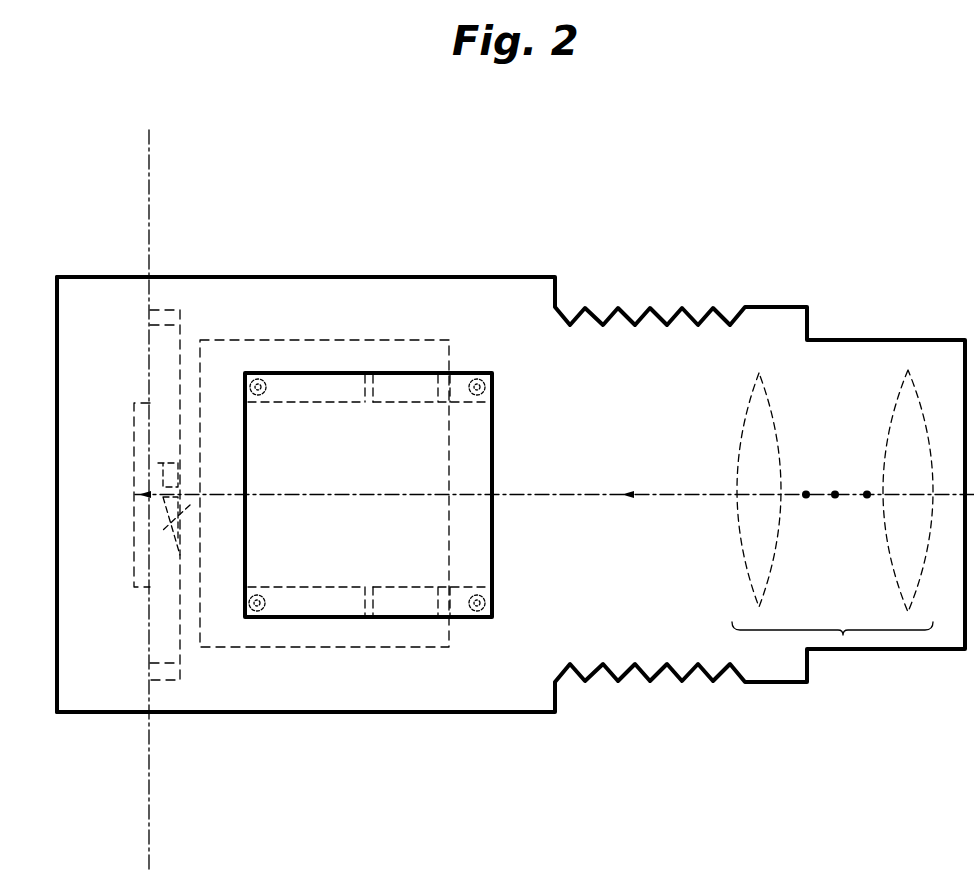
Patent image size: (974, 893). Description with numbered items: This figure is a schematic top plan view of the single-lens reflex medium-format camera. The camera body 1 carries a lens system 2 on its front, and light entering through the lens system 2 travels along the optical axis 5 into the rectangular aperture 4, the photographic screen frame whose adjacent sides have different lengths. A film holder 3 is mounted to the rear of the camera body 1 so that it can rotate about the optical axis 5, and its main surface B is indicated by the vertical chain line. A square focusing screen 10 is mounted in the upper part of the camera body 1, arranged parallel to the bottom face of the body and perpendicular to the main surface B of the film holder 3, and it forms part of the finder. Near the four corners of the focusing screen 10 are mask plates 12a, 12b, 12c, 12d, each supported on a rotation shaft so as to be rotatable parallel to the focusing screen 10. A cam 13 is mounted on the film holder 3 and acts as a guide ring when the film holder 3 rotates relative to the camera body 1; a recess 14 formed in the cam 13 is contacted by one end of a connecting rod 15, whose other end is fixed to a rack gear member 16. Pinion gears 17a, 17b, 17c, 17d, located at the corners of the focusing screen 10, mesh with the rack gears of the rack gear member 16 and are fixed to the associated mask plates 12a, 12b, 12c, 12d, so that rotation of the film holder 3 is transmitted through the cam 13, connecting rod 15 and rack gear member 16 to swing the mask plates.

The camera body 1 is at (508, 713).
The lens system 2 is at (843, 635).
The film holder 3 is at (108, 713).
The rectangular aperture 4 is at (133, 520).
The optical axis 5 is at (607, 497).
The focusing screen 10 is at (493, 452).
The mask plate 12a is at (400, 595).
The mask plate 12b is at (335, 595).
The mask plate 12c is at (335, 405).
The mask plate 12d is at (412, 402).
The cam 13 is at (182, 652).
The recess 14 is at (160, 462).
The connecting rod 15 is at (190, 503).
The rack gear member 16 is at (368, 340).
The pinion gear 17a is at (480, 612).
The pinion gear 17b is at (260, 595).
The pinion gear 17c is at (262, 396).
The pinion gear 17d is at (480, 380).
The main surface of the film holder B is at (150, 858).